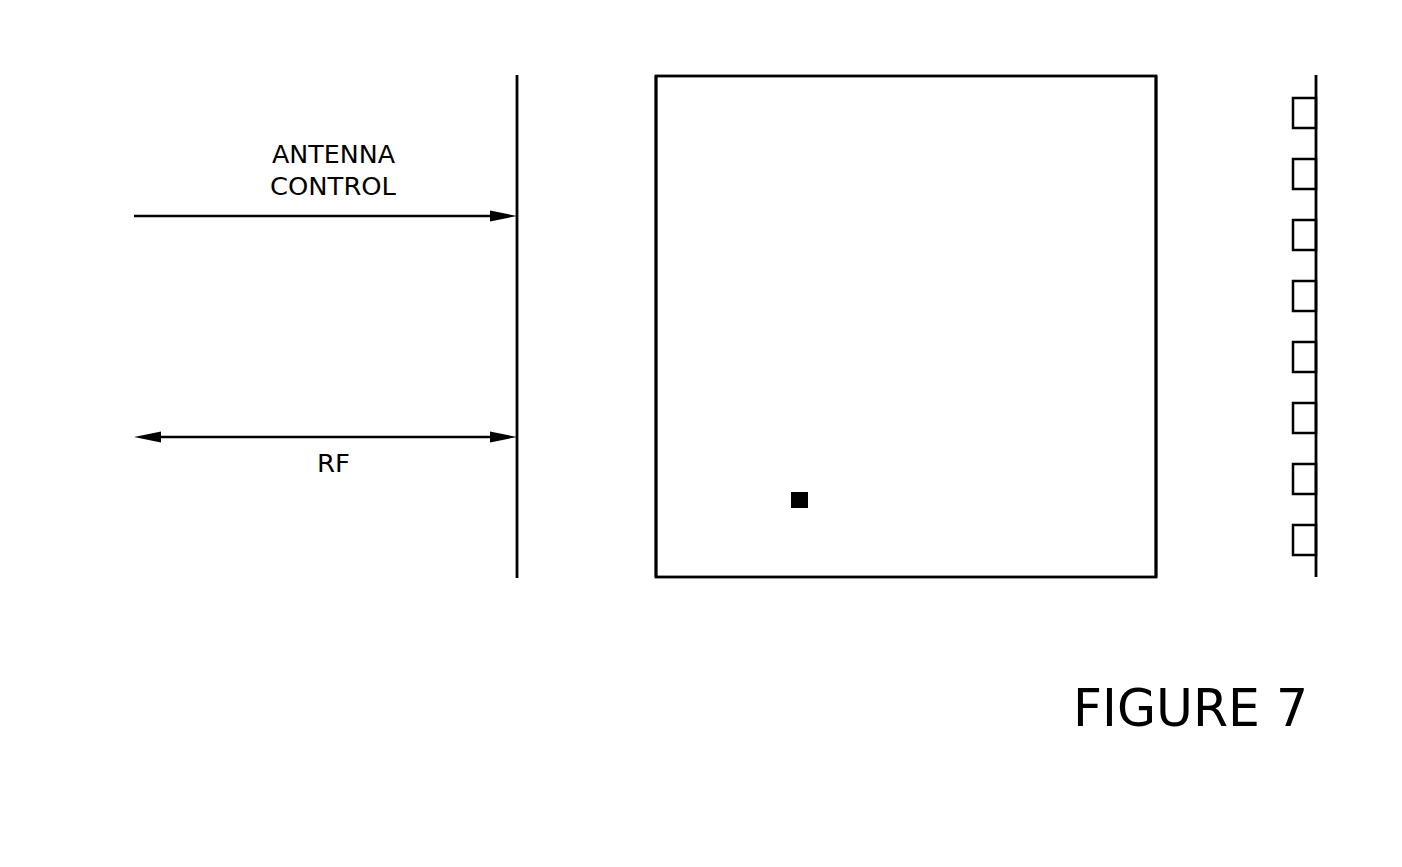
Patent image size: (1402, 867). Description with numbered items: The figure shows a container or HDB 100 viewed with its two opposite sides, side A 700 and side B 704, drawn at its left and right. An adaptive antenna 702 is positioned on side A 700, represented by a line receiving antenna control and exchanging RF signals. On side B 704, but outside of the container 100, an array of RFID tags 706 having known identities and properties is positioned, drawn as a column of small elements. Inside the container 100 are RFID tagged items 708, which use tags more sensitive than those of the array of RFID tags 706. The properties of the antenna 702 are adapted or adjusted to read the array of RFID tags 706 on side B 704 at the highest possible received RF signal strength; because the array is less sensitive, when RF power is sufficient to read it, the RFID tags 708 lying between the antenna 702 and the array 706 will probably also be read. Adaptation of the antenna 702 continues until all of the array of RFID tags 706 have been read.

The container or HDB 100 is at (897, 86).
The side A 700 is at (656, 265).
The adaptive antenna 702 is at (517, 137).
The side B 704 is at (1157, 144).
The array of RFID tags 706 is at (1305, 172).
The RFID tagged items 708 is at (795, 509).